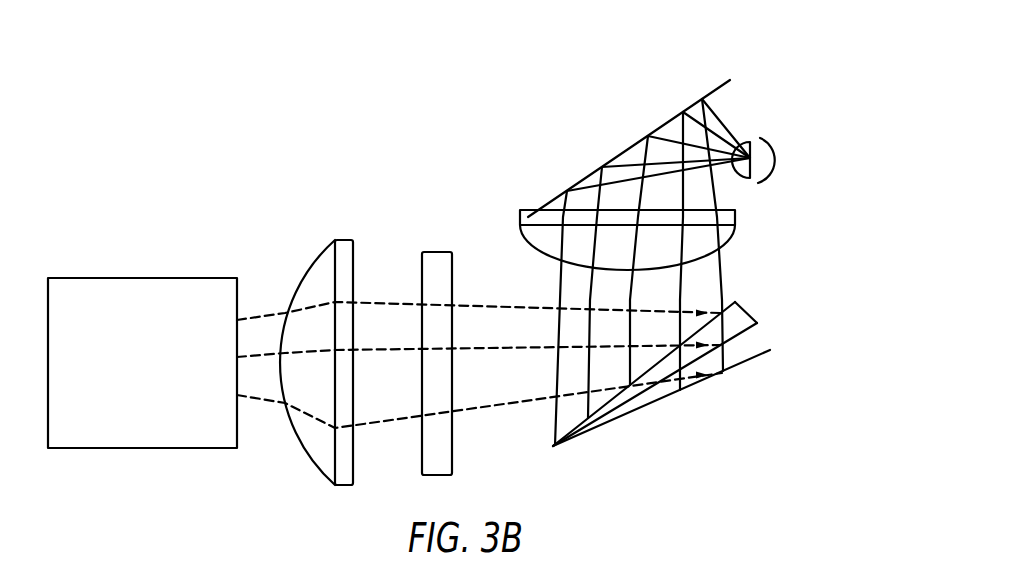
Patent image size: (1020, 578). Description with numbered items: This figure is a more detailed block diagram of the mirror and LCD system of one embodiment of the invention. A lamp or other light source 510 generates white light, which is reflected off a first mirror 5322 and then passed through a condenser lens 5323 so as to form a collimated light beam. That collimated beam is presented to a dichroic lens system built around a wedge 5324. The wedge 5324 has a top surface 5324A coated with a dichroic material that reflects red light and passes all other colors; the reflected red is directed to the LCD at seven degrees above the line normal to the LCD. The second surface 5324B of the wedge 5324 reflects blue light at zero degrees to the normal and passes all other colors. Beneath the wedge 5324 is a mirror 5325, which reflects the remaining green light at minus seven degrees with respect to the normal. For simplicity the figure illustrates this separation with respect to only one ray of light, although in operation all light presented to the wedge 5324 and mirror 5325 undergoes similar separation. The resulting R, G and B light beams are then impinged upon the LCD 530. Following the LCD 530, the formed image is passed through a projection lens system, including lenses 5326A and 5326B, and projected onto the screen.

The light source 510 is at (752, 136).
The first mirror 5322 is at (629, 148).
The condenser lens 5323 is at (736, 228).
The wedge 5324 is at (697, 354).
The top surface of wedge 5324A is at (730, 303).
The second surface of wedge 5324B is at (755, 328).
The mirror 5325 is at (767, 355).
The lens 5326A is at (345, 238).
The lens 5326B is at (178, 277).
The LCD 530 is at (438, 250).
The red light beam R is at (648, 310).
The blue light beam B is at (644, 347).
The green light beam G is at (663, 388).